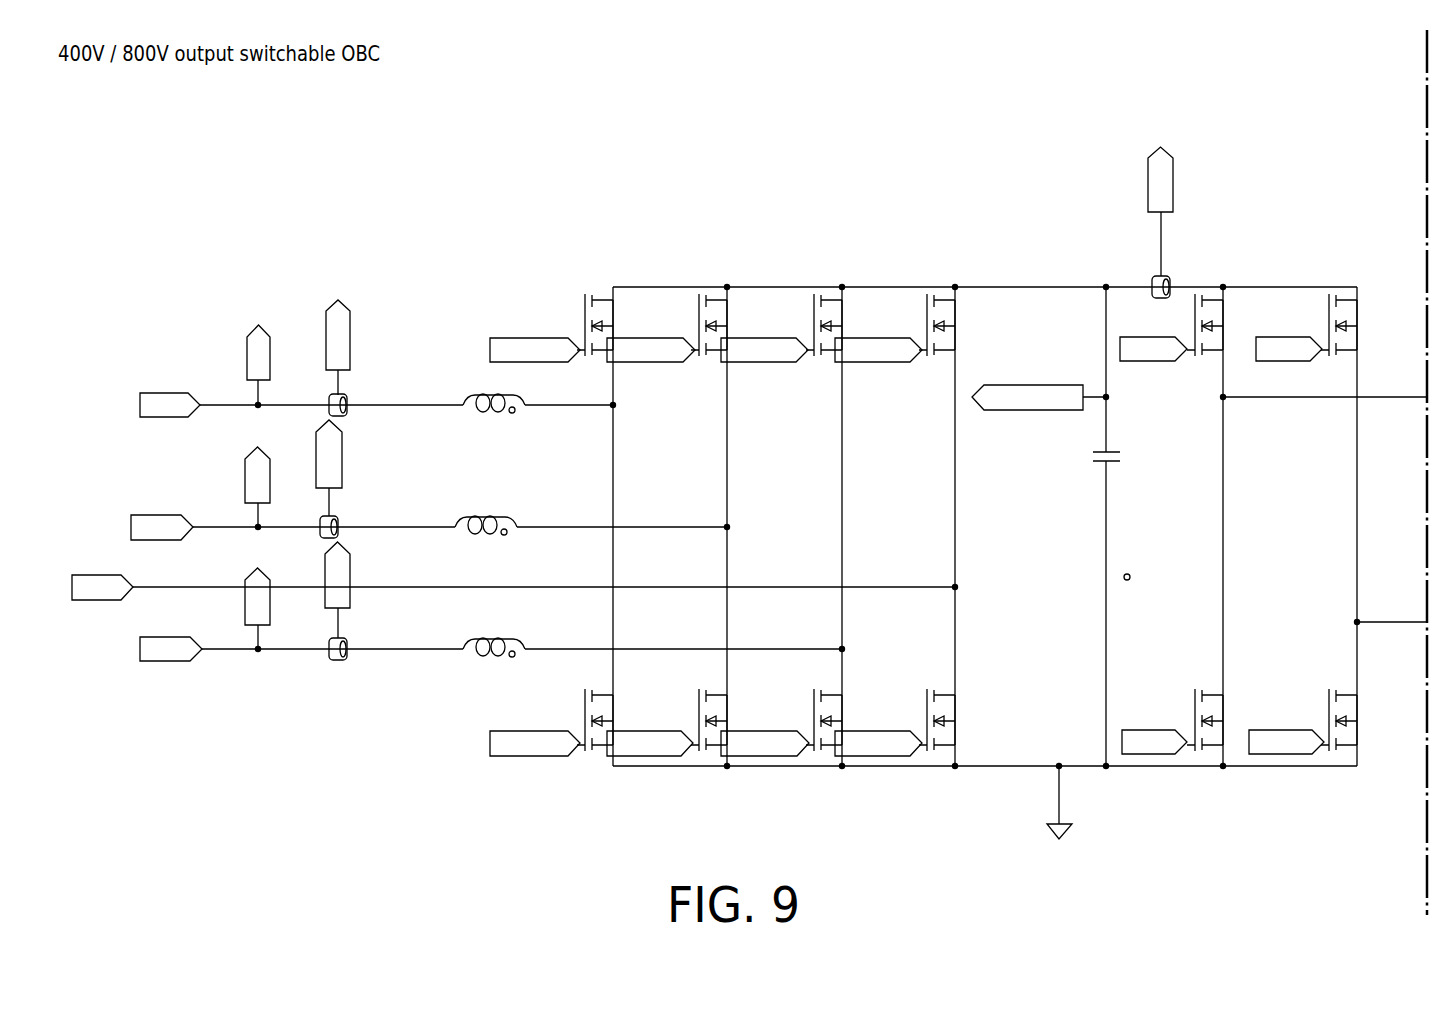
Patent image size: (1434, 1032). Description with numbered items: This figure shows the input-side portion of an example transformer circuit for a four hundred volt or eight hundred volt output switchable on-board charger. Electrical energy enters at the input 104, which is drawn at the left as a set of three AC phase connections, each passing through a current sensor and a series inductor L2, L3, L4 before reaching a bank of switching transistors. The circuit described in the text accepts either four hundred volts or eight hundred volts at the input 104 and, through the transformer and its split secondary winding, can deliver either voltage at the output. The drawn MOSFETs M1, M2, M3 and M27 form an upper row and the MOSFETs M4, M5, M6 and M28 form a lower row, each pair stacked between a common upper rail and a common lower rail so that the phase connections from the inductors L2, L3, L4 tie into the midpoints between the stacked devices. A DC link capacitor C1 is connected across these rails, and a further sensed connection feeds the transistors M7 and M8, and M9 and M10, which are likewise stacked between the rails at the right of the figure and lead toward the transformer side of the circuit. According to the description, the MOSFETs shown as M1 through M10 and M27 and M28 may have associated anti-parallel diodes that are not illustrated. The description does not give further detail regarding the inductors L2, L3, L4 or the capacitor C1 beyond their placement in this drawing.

The input 104 is at (150, 299).
The MOSFET M1 is at (620, 309).
The MOSFET M2 is at (724, 309).
The MOSFET M3 is at (839, 309).
The MOSFET M27 is at (956, 309).
The MOSFET M4 is at (598, 708).
The MOSFET M5 is at (713, 704).
The MOSFET M6 is at (839, 742).
The MOSFET M28 is at (956, 742).
The MOSFET M7 is at (1245, 325).
The MOSFET M8 is at (1245, 720).
The MOSFET M9 is at (1364, 325).
The MOSFET M10 is at (1364, 720).
The inductor L2 is at (494, 402).
The inductor L3 is at (486, 524).
The inductor L4 is at (494, 645).
The DC link capacitor C1 is at (1138, 458).